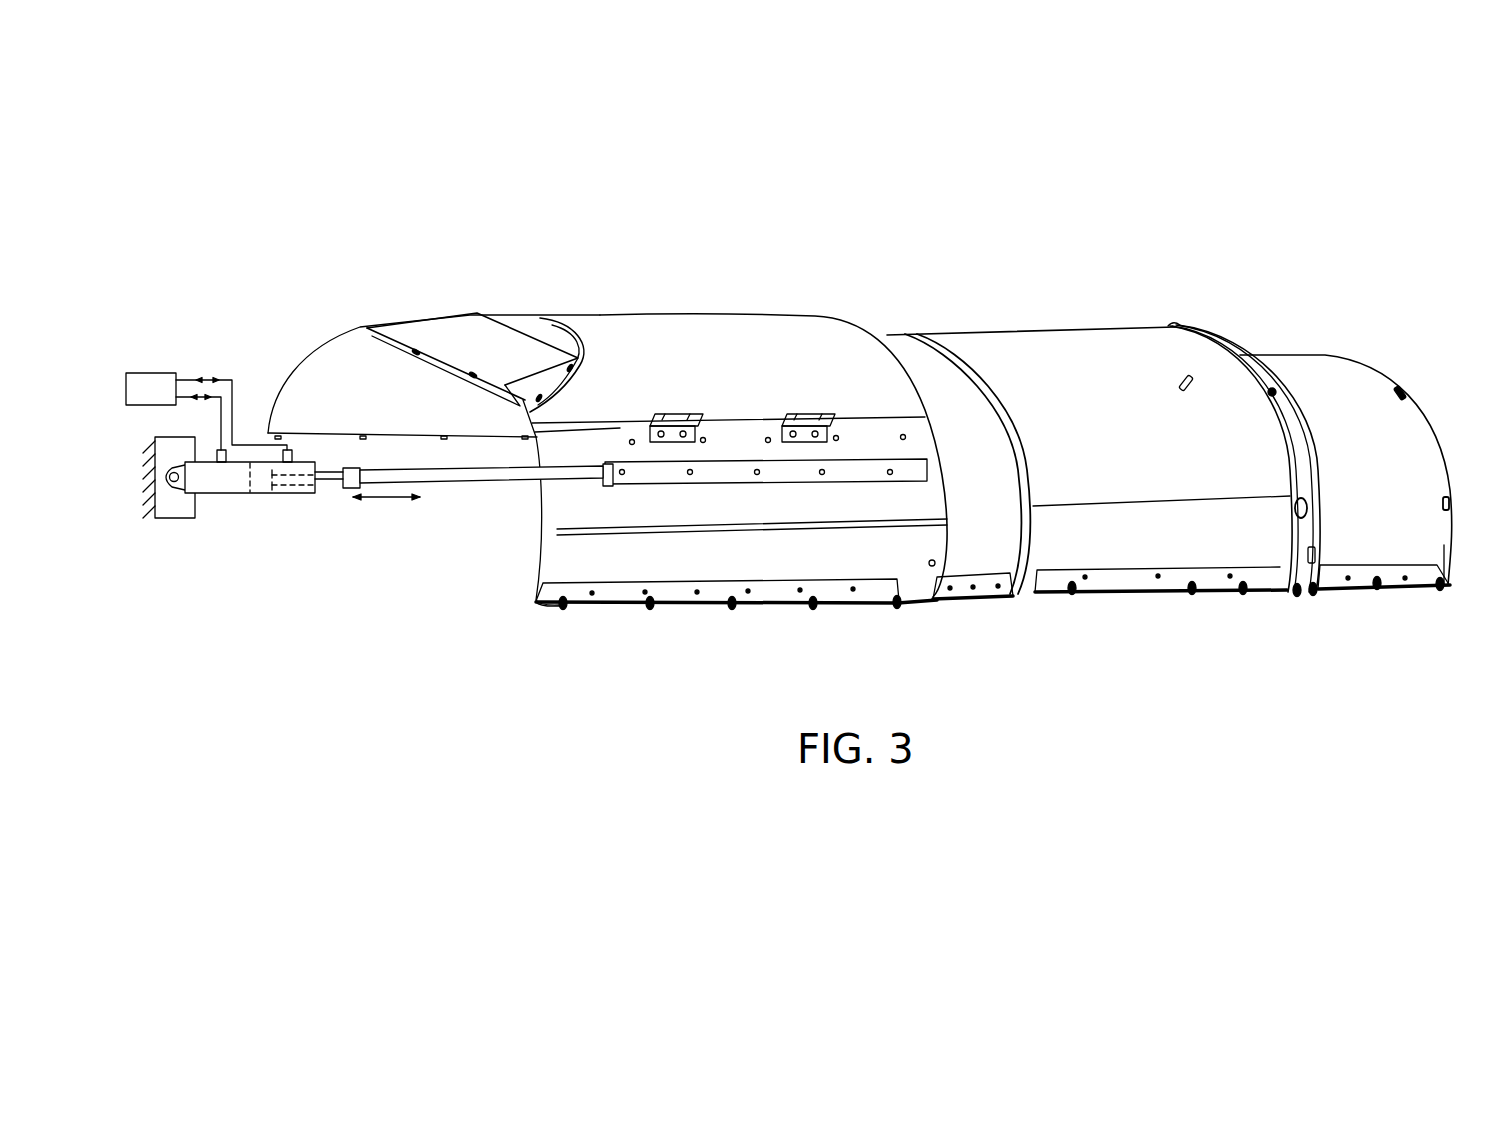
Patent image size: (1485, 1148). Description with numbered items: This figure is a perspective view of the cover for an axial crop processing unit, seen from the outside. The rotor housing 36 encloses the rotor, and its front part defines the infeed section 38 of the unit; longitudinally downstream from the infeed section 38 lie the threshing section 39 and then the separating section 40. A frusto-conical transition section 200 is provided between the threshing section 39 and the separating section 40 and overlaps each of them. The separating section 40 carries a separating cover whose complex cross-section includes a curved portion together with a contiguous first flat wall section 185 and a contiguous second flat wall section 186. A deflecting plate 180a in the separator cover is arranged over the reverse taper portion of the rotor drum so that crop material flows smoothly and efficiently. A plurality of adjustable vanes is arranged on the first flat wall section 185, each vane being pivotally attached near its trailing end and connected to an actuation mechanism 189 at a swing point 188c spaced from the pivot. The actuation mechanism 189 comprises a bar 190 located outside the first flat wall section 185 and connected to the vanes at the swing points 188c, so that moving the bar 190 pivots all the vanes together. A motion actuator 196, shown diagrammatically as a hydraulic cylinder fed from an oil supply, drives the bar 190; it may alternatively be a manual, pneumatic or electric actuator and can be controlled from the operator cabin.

The separating section 40 is at (697, 301).
The frusto-conical transition section 200 is at (894, 321).
The threshing section 39 is at (1042, 320).
The rotor housing 36 is at (1137, 308).
The infeed section 38 is at (1299, 347).
The deflecting plate 180a is at (470, 323).
The bar 190 is at (636, 466).
The swing point 188c is at (756, 477).
The first flat wall section 185 is at (562, 503).
The second flat wall section 186 is at (563, 553).
The actuation mechanism 189 is at (457, 496).
The motion actuator 196 is at (245, 509).